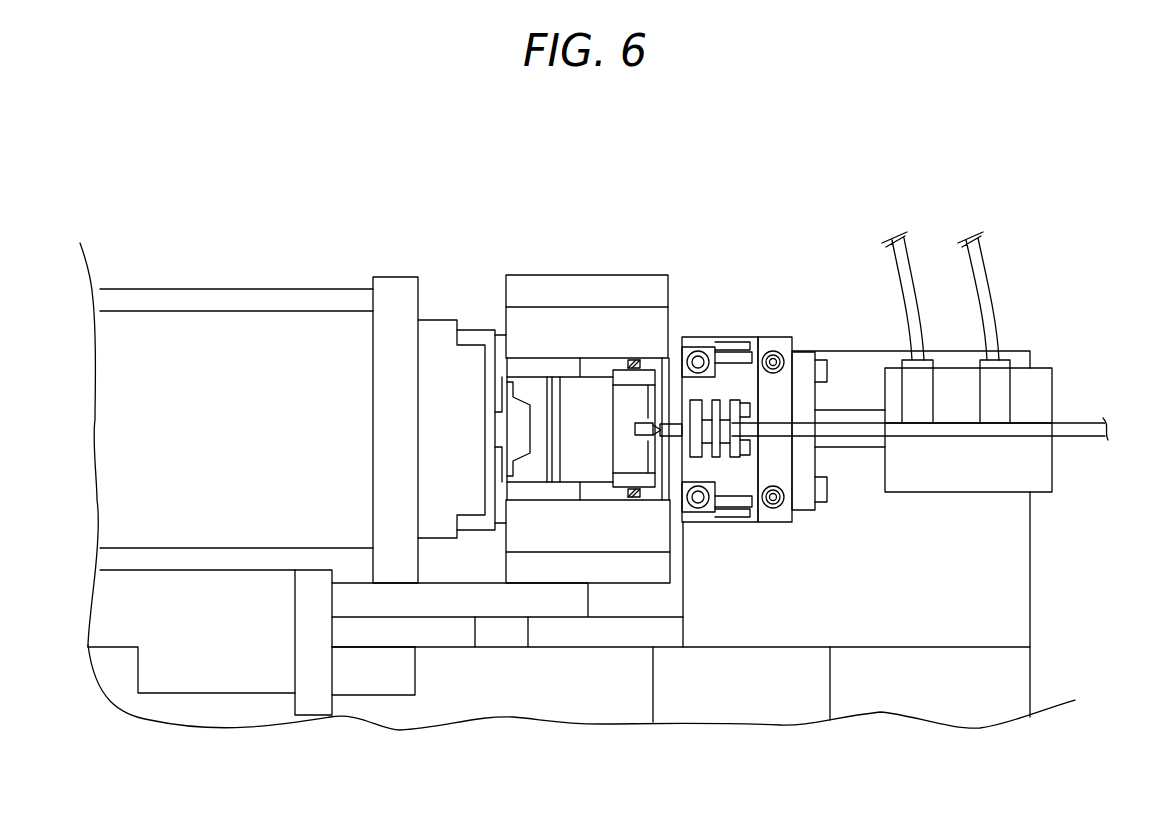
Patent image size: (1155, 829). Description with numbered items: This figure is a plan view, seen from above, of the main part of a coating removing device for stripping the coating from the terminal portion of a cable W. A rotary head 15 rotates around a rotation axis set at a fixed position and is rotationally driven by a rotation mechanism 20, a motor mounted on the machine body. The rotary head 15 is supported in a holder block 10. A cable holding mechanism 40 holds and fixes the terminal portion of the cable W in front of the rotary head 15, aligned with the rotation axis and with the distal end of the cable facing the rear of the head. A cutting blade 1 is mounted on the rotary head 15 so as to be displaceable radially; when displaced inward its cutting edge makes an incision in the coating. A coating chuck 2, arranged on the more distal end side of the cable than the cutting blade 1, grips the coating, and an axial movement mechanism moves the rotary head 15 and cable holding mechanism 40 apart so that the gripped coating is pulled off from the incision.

The rotation mechanism 20 is at (243, 420).
The rotary head 15 is at (486, 313).
The holder block 10 is at (557, 333).
The coating chuck 2 is at (648, 408).
The cutting blade 1 is at (677, 395).
The cable holding mechanism 40 is at (740, 385).
The workpiece shaft W is at (850, 430).